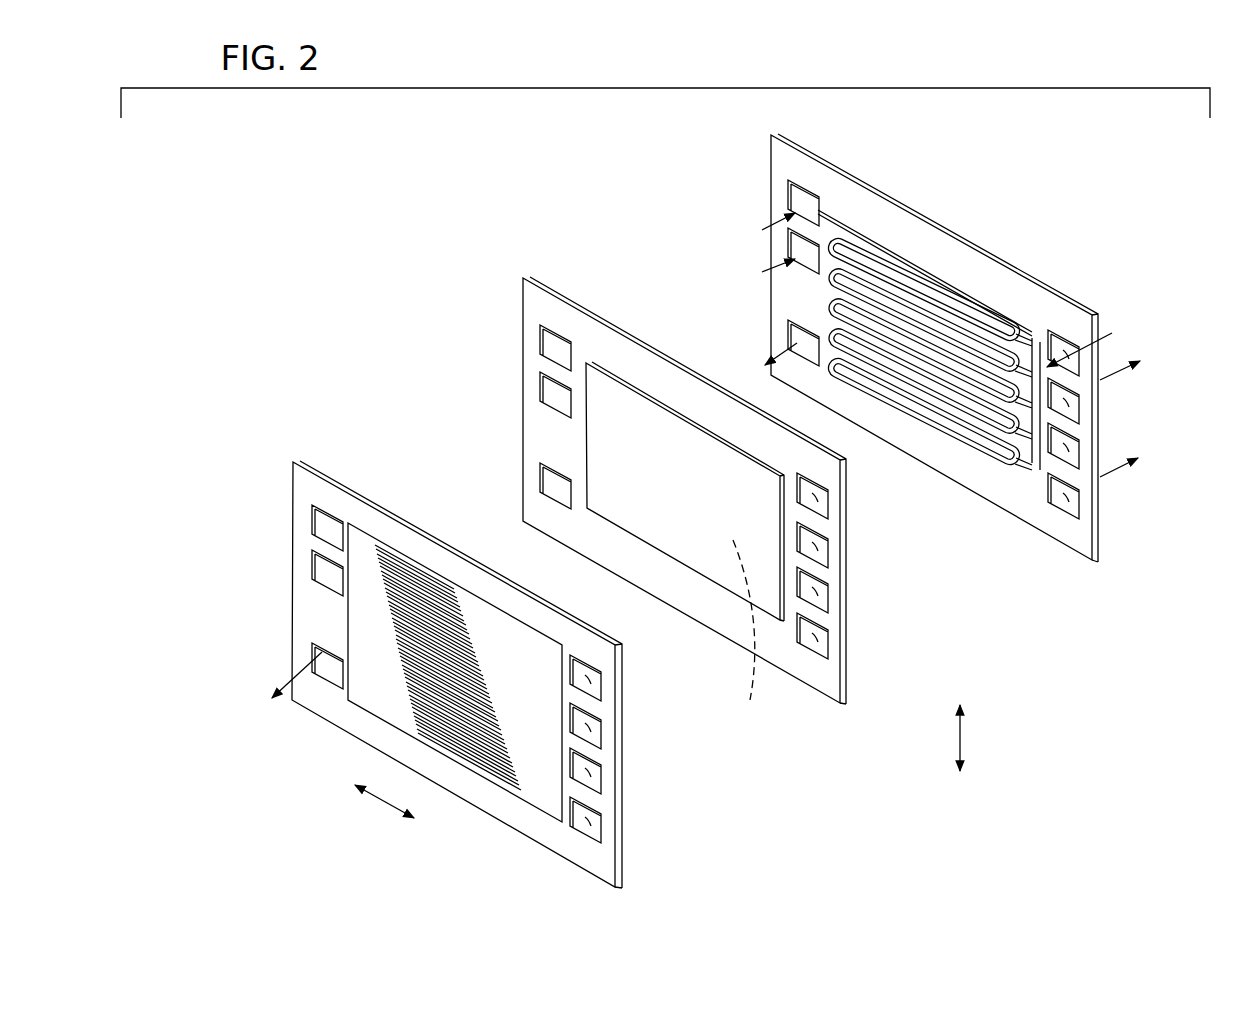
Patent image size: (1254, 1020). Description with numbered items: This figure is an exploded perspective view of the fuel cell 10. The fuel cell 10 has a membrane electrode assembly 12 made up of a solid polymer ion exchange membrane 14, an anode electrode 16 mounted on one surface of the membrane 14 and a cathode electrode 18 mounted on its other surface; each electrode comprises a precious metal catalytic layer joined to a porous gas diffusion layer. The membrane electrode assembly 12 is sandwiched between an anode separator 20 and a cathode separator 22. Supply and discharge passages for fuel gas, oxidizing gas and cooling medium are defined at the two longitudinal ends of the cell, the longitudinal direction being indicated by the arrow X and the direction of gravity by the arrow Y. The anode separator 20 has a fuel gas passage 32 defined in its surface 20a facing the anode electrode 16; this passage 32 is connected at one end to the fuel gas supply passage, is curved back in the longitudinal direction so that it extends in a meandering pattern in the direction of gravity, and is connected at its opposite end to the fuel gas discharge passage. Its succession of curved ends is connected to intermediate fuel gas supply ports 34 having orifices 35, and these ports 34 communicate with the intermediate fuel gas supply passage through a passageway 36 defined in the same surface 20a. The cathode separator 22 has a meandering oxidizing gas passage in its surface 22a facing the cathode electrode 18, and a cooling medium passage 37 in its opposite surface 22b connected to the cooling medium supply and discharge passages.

The fuel cell 10 is at (475, 189).
The membrane electrode assembly 12 is at (493, 296).
The solid polymer ion exchange membrane 14 is at (654, 343).
The anode electrode 16 is at (749, 633).
The cathode electrode 18 is at (675, 542).
The anode separator 20 is at (939, 211).
The surface of anode separator 20a is at (875, 220).
The cathode separator 22 is at (245, 438).
The surface of cathode separator 22a is at (455, 578).
The opposite surface of cathode separator 22b is at (392, 525).
The fuel gas passage 32 is at (955, 285).
The intermediate fuel gas supply ports 34 is at (1018, 466).
The orifices 35 is at (1037, 472).
The passageway 36 is at (1023, 340).
The cooling medium passage 37 is at (502, 777).